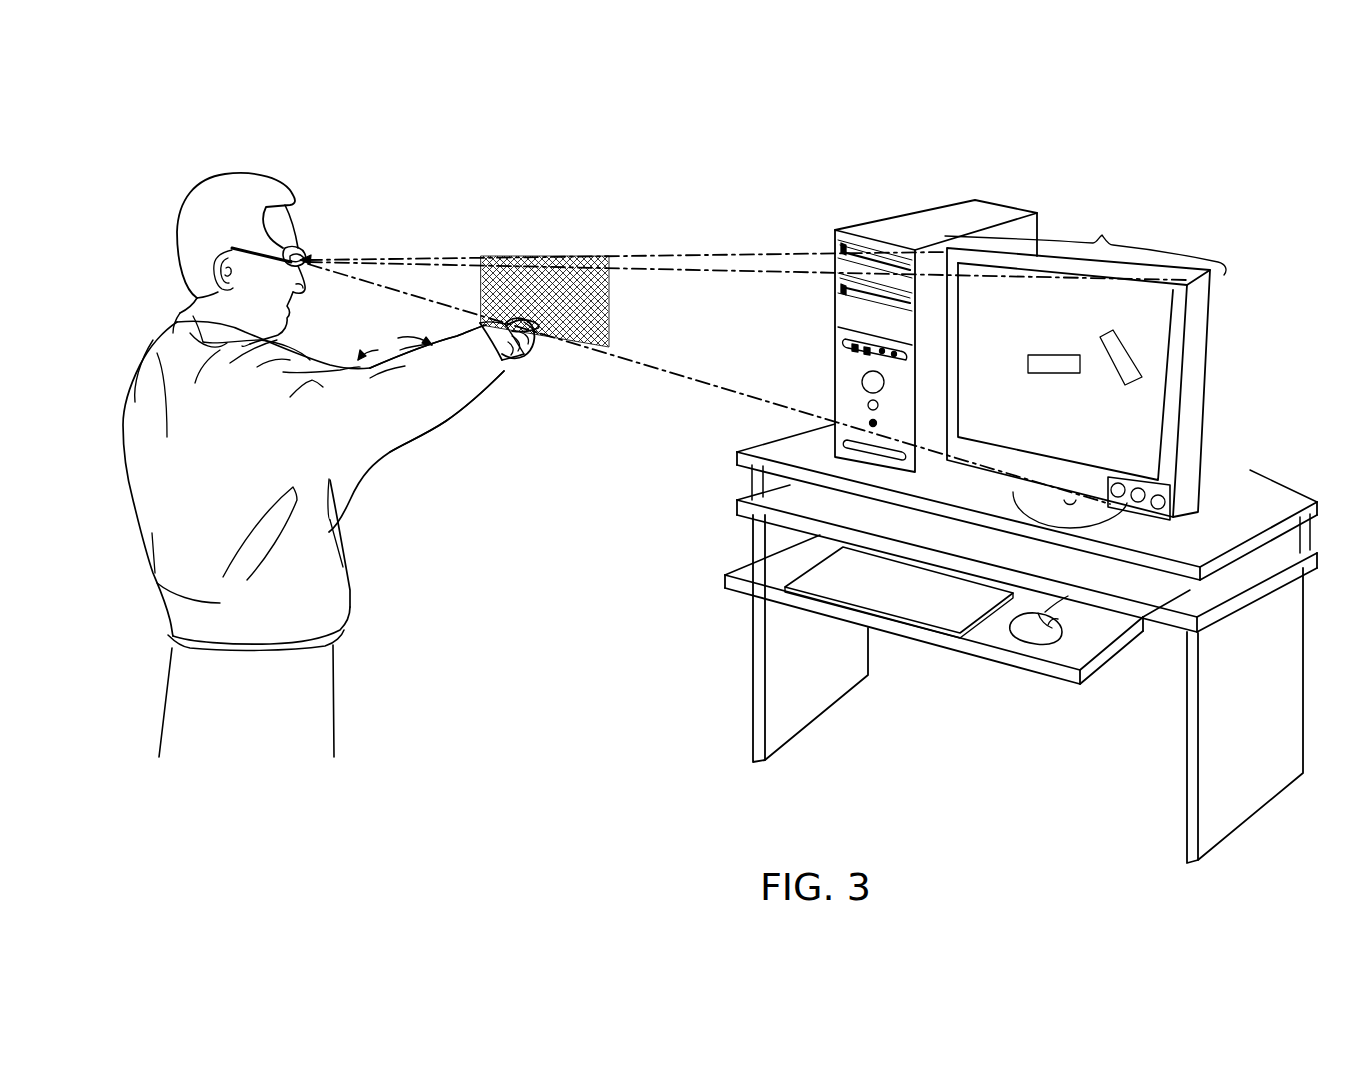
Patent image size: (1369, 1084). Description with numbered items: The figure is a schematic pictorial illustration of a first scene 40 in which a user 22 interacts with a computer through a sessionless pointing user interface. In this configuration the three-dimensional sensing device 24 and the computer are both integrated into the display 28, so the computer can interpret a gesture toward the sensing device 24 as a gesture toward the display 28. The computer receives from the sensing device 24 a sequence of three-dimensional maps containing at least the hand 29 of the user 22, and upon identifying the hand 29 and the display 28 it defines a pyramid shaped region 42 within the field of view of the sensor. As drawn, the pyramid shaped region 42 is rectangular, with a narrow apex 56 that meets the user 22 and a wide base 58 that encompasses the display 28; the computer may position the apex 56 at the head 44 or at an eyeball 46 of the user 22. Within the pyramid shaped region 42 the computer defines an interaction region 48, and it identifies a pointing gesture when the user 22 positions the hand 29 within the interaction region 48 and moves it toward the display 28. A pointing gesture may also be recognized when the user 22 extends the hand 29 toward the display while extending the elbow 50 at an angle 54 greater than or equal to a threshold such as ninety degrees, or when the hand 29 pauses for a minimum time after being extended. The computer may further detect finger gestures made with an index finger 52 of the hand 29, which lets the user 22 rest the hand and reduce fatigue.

The user 22 is at (152, 358).
The 3D sensing device 24 is at (1176, 490).
The display 28 is at (1207, 344).
The hand 29 is at (497, 370).
The first scene 40 is at (184, 127).
The pyramid shaped region 42 is at (664, 250).
The head 44 is at (192, 190).
The eyeball 46 is at (285, 250).
The interaction region 48 is at (602, 304).
The elbow 50 is at (416, 425).
The index finger 52 is at (524, 322).
The angle 54 is at (395, 340).
The apex 56 is at (301, 260).
The base 58 is at (1085, 245).